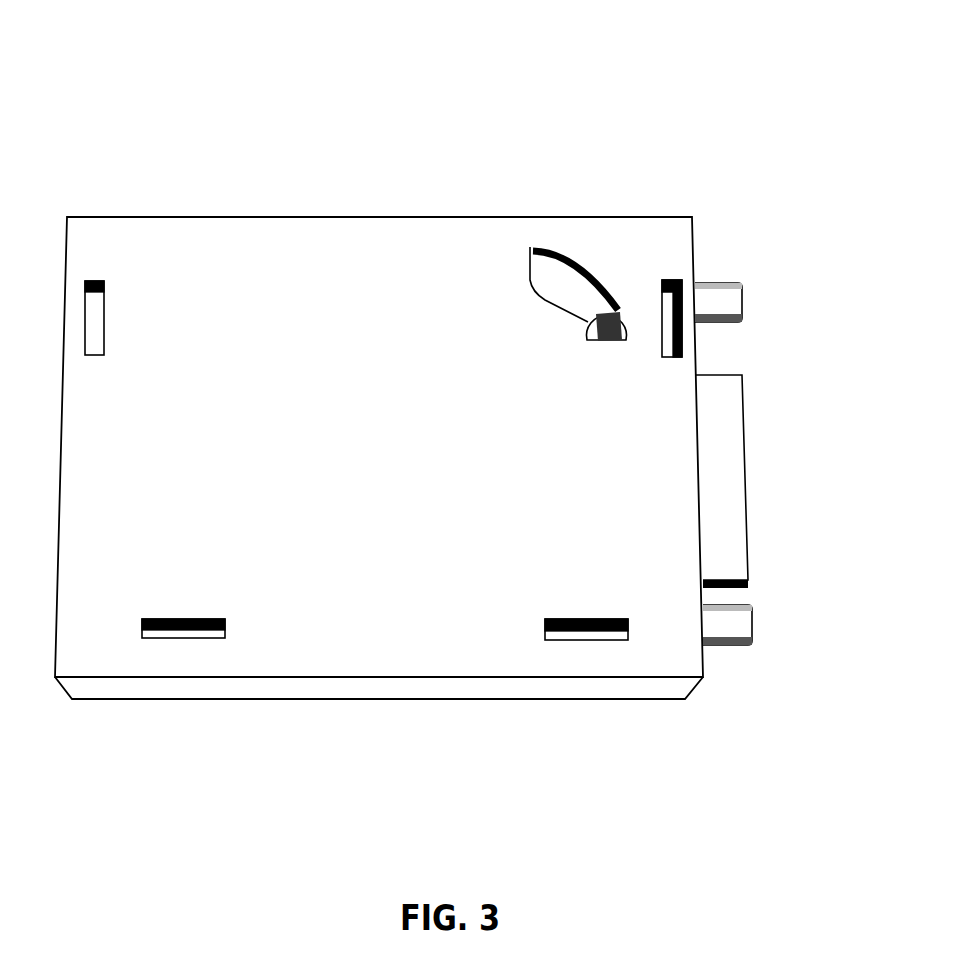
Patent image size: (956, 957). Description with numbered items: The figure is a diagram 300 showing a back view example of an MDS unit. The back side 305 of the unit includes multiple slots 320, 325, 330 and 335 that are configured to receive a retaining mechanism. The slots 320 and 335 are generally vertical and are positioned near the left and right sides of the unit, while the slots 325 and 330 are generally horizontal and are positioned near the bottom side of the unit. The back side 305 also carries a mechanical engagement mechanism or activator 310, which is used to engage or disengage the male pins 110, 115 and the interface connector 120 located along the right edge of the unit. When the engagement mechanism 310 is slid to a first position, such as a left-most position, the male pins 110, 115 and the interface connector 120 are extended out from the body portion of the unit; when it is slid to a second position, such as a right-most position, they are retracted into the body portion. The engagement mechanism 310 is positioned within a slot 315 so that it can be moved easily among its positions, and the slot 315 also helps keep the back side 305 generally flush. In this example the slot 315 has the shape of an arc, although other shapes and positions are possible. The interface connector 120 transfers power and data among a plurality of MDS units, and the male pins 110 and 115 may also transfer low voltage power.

The diagram 300 is at (170, 105).
The back side 305 is at (363, 416).
The engagement mechanism 310 is at (620, 312).
The slot 315 is at (558, 252).
The slot 320 is at (105, 315).
The slot 325 is at (227, 622).
The slot 330 is at (580, 619).
The slot 335 is at (663, 348).
The male pin 110 is at (742, 303).
The male pin 115 is at (755, 622).
The interface connector 120 is at (742, 468).